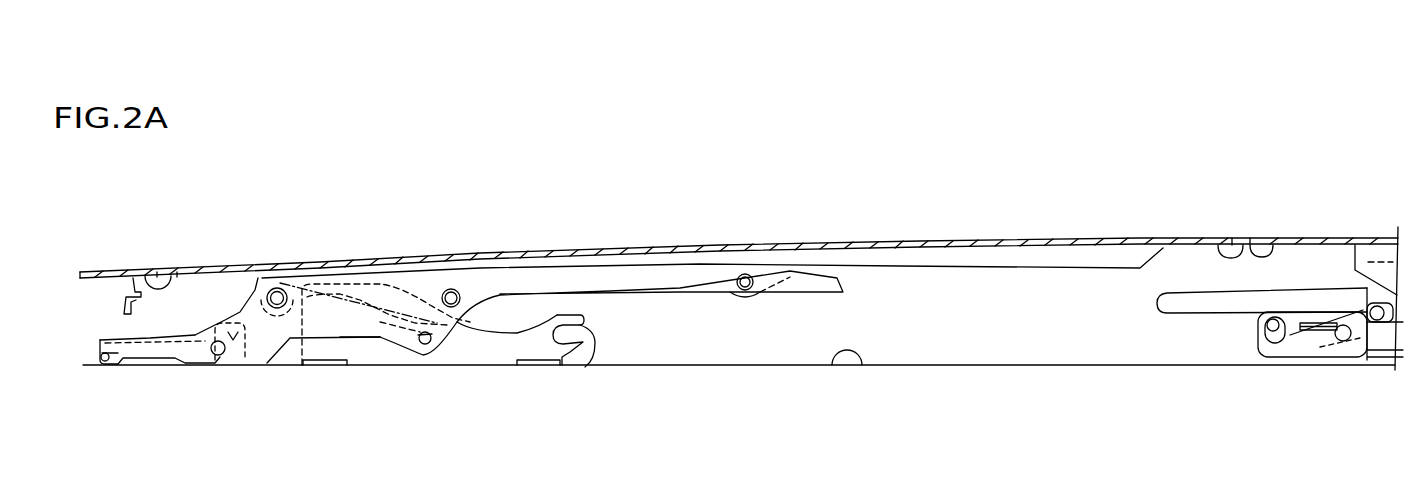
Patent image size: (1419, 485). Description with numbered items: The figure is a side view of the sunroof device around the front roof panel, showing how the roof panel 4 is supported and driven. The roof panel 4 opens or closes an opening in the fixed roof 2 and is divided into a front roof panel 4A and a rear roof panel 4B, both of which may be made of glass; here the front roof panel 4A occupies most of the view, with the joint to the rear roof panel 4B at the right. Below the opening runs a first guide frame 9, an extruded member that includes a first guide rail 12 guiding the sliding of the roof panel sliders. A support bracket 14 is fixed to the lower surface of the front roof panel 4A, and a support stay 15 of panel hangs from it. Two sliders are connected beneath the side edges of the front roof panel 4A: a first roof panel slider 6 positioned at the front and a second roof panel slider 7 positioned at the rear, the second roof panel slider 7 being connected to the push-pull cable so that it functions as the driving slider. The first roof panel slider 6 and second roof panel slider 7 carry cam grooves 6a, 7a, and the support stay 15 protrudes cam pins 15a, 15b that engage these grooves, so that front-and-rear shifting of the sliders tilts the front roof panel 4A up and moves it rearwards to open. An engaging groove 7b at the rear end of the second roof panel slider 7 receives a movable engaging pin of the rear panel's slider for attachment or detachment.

The fixed roof 2 is at (122, 271).
The roof panel 4 is at (739, 229).
The front roof panel 4A is at (895, 241).
The rear roof panel 4B is at (1322, 238).
The first roof panel slider 6 is at (153, 360).
The cam groove 6a is at (238, 357).
The second roof panel slider 7 is at (494, 347).
The cam groove 7a is at (357, 348).
The engaging groove 7b is at (584, 363).
The first guide frame 9 is at (850, 367).
The first guide rail 12 is at (860, 392).
The support bracket 14 is at (1027, 258).
The support stay of panel 15 is at (669, 277).
The cam pin 15a is at (218, 356).
The cam pin 15b is at (425, 345).